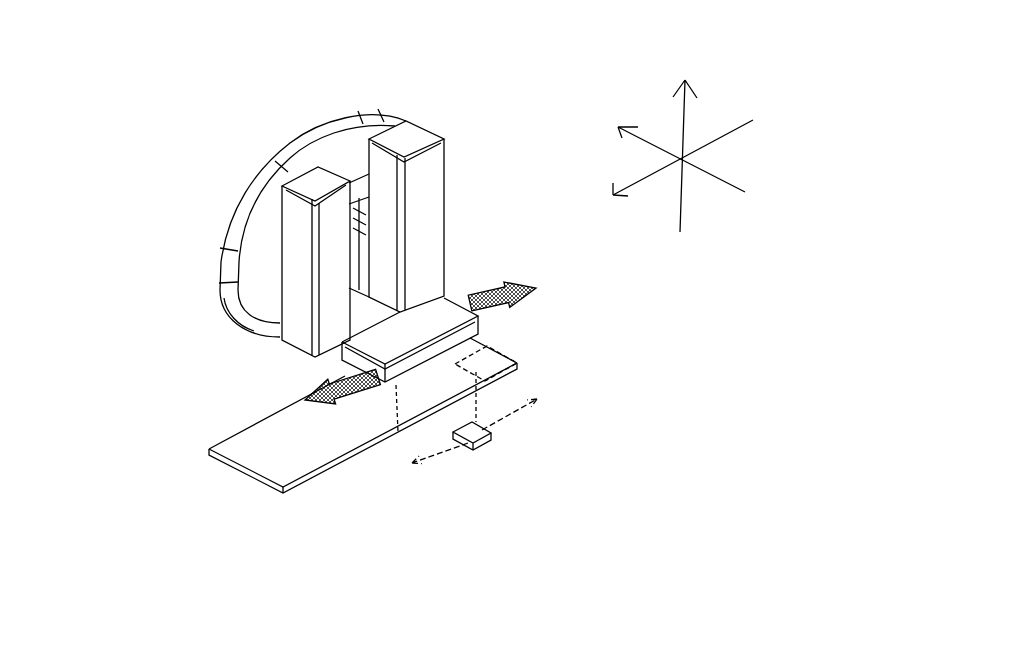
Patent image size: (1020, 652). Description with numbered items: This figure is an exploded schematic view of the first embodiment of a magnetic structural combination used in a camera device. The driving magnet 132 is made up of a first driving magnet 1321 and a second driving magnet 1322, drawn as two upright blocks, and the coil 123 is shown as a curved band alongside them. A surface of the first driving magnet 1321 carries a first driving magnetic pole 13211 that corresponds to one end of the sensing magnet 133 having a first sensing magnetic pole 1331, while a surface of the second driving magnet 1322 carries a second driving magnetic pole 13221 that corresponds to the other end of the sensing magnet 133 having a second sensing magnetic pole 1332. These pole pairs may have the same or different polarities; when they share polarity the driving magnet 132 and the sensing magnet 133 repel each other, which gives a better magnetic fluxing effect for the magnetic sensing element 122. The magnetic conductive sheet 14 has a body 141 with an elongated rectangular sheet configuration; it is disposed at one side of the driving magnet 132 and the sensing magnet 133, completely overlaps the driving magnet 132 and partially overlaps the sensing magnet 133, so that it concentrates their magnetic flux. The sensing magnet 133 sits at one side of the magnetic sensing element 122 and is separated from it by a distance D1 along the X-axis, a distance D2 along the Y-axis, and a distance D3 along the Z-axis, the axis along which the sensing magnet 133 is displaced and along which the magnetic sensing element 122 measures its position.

The coil 123 is at (255, 215).
The driving magnet 132 is at (290, 88).
The first driving magnet 1321 is at (320, 182).
The second driving magnet 1322 is at (408, 142).
The first driving magnetic pole 13211 is at (322, 336).
The second driving magnetic pole 13221 is at (426, 272).
The sensing magnet 133 is at (399, 432).
The first sensing magnetic pole 1331 is at (341, 367).
The second sensing magnetic pole 1332 is at (460, 295).
The magnetic conductive sheet 14 is at (187, 458).
The body 141 is at (257, 449).
The magnetic sensing element 122 is at (485, 444).
The distance D1 is at (457, 364).
The distance D2 is at (483, 405).
The distance D3 is at (474, 441).